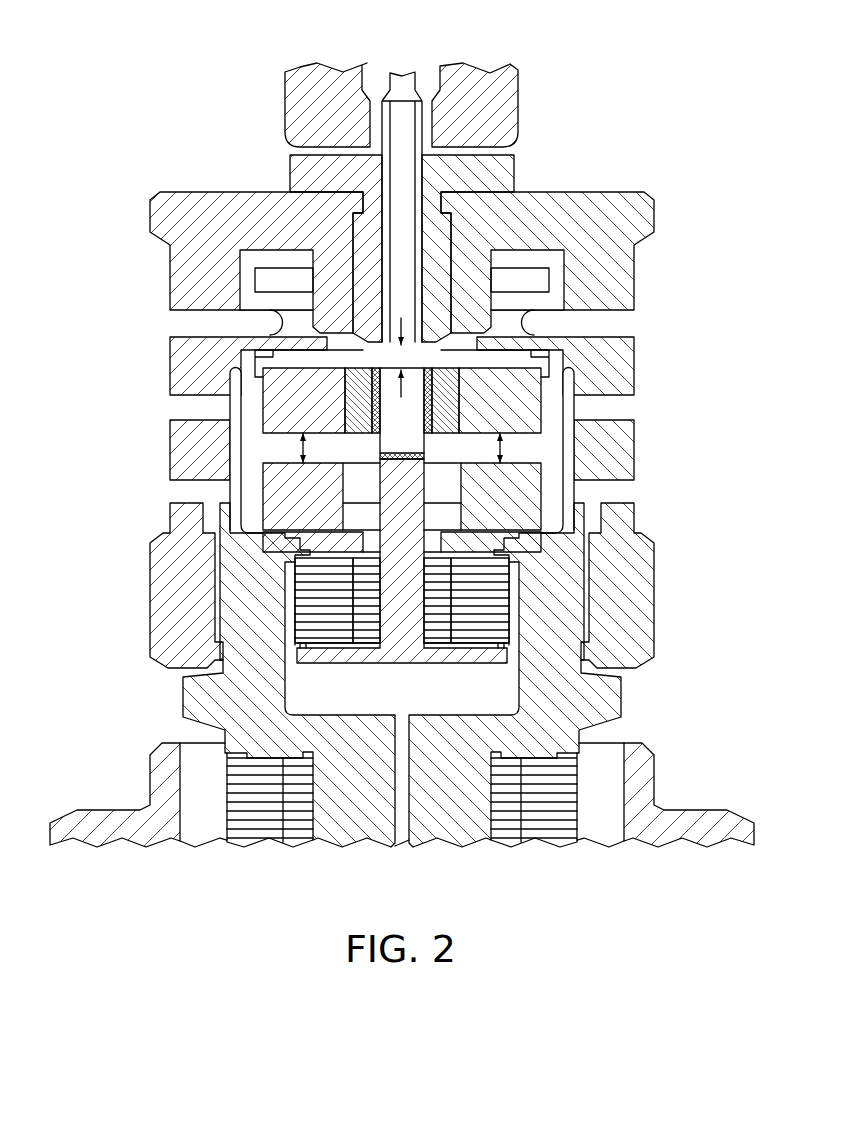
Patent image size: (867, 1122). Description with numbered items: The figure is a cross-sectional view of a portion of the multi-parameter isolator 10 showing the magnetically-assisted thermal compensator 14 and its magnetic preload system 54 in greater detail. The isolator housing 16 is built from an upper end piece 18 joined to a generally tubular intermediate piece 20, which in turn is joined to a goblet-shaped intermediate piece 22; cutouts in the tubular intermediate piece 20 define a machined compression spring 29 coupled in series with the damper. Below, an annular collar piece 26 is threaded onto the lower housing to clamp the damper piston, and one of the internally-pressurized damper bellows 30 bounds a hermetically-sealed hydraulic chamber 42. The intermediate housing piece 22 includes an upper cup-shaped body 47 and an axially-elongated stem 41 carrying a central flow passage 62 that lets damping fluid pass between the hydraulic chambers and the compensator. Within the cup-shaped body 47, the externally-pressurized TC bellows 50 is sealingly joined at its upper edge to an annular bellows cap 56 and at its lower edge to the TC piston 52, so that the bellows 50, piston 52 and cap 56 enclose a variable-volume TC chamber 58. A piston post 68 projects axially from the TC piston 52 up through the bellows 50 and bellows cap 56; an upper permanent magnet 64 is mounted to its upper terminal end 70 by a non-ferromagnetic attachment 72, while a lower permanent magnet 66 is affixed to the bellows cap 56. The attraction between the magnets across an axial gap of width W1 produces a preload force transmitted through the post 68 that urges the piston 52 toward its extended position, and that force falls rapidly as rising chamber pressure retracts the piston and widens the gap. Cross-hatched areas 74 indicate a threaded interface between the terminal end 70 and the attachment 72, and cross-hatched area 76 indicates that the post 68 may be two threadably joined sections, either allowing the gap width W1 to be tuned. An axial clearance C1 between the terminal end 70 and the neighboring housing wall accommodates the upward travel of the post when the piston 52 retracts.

The multi-parameter isolator 10 is at (188, 70).
The magnetically-assisted thermal compensator 14 is at (587, 513).
The isolator housing 16 is at (652, 181).
The upper end piece 18 is at (510, 104).
The tubular intermediate piece 20 is at (625, 263).
The goblet-shaped intermediate piece 22 is at (580, 616).
The annular collar piece 26 is at (103, 817).
The machined compression spring 29 is at (627, 365).
The bellows 30 is at (577, 796).
The stem 41 is at (333, 833).
The hydraulic chamber 42 is at (505, 827).
The upper cup-shaped body 47 is at (225, 585).
The TC bellows 50 is at (313, 610).
The TC piston 52 is at (440, 657).
The magnetic preload system 54 is at (231, 447).
The bellows cap 56 is at (283, 540).
The TC chamber 58 is at (383, 707).
The flow passage 62 is at (401, 835).
The upper permanent magnet 64 is at (282, 377).
The lower permanent magnet 66 is at (318, 505).
The piston post 68 is at (413, 567).
The upper terminal end 70 is at (413, 437).
The attachment 72 is at (442, 372).
The cross-hatched areas 74 is at (378, 397).
The cross-hatched area 76 is at (402, 460).
The axial clearance C1 is at (401, 356).
The gap width W1 is at (305, 448).